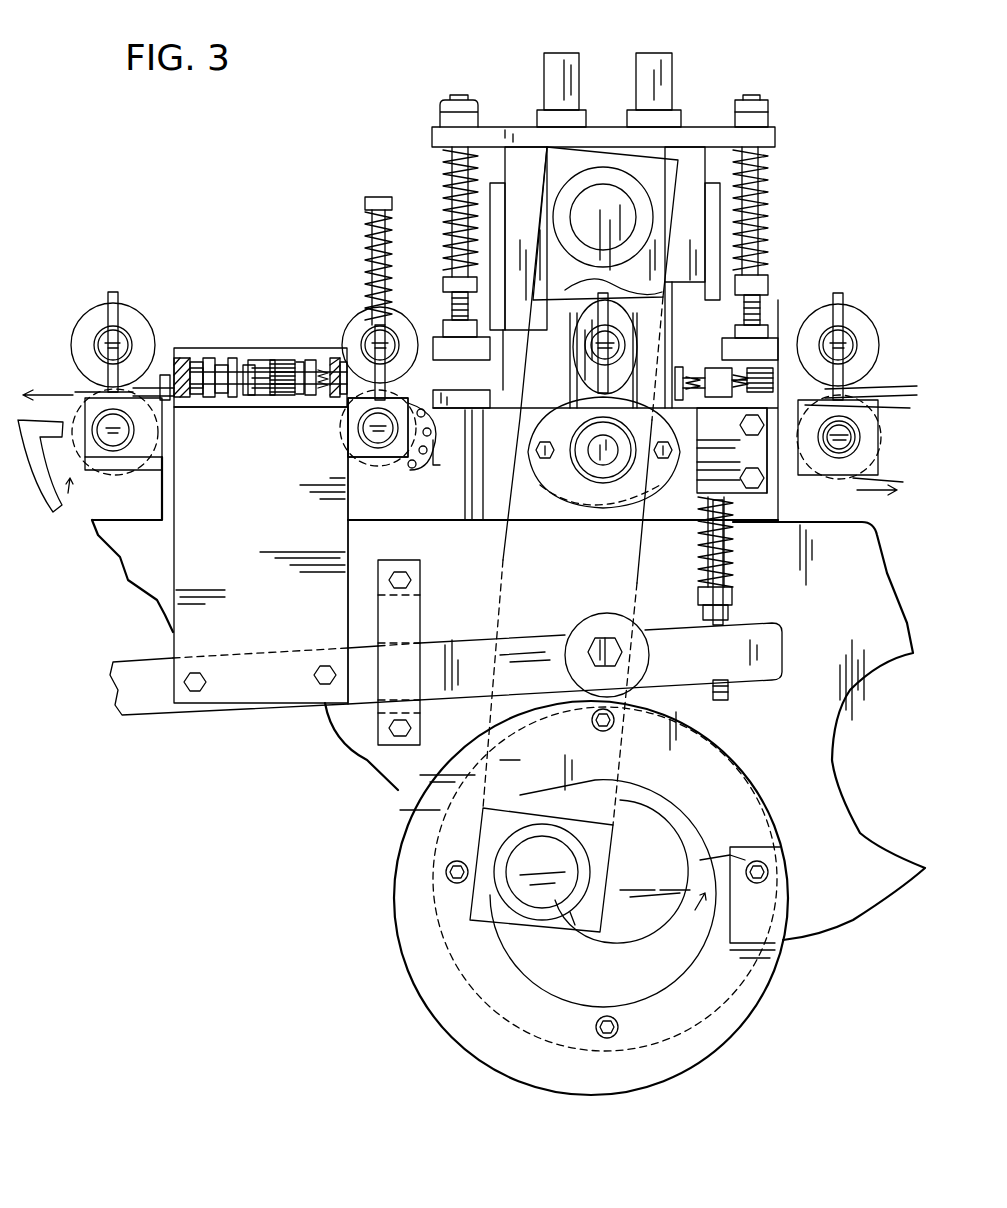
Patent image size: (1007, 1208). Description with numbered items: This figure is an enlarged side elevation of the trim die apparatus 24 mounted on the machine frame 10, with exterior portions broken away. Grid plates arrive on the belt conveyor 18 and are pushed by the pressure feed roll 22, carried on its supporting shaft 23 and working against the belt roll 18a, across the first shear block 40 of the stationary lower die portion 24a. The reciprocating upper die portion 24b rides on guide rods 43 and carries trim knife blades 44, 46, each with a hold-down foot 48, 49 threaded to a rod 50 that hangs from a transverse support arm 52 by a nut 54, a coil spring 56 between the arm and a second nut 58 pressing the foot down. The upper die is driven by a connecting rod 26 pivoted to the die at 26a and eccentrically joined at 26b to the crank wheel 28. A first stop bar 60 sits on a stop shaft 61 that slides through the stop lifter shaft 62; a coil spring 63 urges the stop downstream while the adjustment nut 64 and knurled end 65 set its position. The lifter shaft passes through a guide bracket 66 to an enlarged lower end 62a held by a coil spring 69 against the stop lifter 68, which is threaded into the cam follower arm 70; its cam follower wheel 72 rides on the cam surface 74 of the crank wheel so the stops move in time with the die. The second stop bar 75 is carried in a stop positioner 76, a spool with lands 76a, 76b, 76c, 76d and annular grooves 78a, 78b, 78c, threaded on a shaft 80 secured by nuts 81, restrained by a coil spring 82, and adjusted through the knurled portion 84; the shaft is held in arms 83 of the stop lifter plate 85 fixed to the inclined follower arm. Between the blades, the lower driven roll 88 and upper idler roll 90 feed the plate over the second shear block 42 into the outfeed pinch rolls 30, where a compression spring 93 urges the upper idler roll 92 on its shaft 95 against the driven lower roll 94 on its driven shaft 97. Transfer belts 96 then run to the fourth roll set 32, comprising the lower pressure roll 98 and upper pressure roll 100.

The machine frame 10 is at (880, 595).
The belt conveyor 18 is at (880, 392).
The belt roll 18a is at (880, 445).
The pressure feed roll 22 is at (858, 310).
The supporting shaft 23 is at (856, 345).
The trim die apparatus 24 is at (516, 82).
The lower die portion 24a is at (498, 522).
The upper die portion 24b is at (690, 165).
The connecting rod 26 is at (500, 607).
The pivotal connection 26a is at (572, 200).
The eccentric connection 26b is at (562, 920).
The crank wheel 28 is at (765, 848).
The outfeed pinch rolls 30 is at (344, 224).
The fourth roll set 32 is at (135, 298).
The first shear block 40 is at (790, 457).
The second shear block 42 is at (435, 398).
The guide rods 43 is at (637, 60).
The trim knife blade 44 is at (714, 242).
The trim knife blade 46 is at (500, 218).
The hold-down foot 48 is at (760, 325).
The hold-down foot 49 is at (440, 337).
The threaded rod 50 is at (448, 178).
The transverse support arm 52 is at (432, 137).
The nut 54 is at (440, 118).
The coil spring 56 is at (445, 205).
The nut 58 is at (447, 282).
The first stop bar 60 is at (680, 400).
The stop shaft 61 is at (684, 368).
The stop lifter shaft 62 is at (718, 368).
The enlarged lower end 62a is at (698, 598).
The coil spring 63 is at (688, 400).
The adjustment nut 64 is at (750, 384).
The knurled end 65 is at (752, 350).
The guide bracket 66 is at (697, 472).
The stop lifter 68 is at (730, 605).
The coil spring 69 is at (700, 555).
The cam follower arm 70 is at (782, 650).
The cam follower wheel 72 is at (600, 614).
The cam surface 74 is at (740, 752).
The second stop bar 75 is at (300, 360).
The stop positioner 76 is at (241, 333).
The land 76a is at (343, 398).
The large land 76b is at (266, 398).
The land 76c is at (224, 396).
The land 76d is at (197, 362).
The annular groove 78a is at (335, 358).
The annular groove 78b is at (236, 360).
The annular groove 78c is at (215, 360).
The shaft 80 is at (205, 398).
The nuts 81 is at (324, 370).
The coil spring 82 is at (314, 398).
The arms 83 is at (188, 398).
The knurled portion 84 is at (264, 396).
The stop lifter plate 85 is at (172, 540).
The lower driven roll 88 is at (590, 392).
The upper idler roll 90 is at (590, 306).
The upper idler roll 92 is at (355, 315).
The compression spring 93 is at (366, 228).
The driven lower roll 94 is at (388, 460).
The shaft 95 is at (388, 322).
The transfer belts 96 is at (158, 385).
The driven shaft 97 is at (372, 452).
The lower pressure roll 98 is at (105, 460).
The upper pressure roll 100 is at (103, 320).